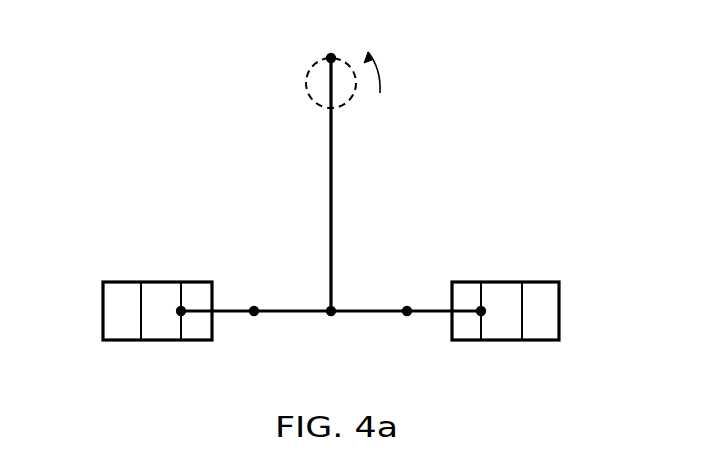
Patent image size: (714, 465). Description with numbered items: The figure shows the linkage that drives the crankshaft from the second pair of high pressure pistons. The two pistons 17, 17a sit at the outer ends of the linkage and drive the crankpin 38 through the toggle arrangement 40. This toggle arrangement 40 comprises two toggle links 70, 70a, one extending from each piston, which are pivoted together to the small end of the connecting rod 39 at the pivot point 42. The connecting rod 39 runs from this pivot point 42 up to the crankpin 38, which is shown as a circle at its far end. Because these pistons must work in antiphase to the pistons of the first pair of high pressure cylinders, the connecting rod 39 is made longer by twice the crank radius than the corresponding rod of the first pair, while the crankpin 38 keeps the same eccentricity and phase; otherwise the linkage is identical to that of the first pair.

The piston 17 is at (162, 290).
The piston 17a is at (501, 295).
The crankpin 38 is at (333, 56).
The connecting rod 39 is at (334, 183).
The toggle arrangement 40 is at (338, 330).
The pivot point 42 is at (335, 308).
The toggle link 70 is at (302, 310).
The toggle link 70a is at (373, 313).